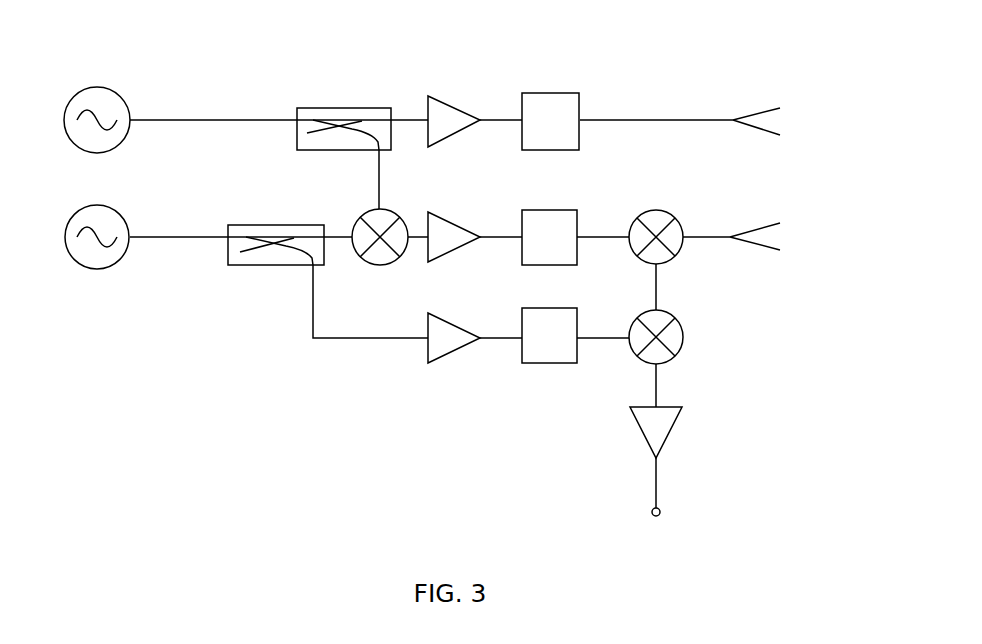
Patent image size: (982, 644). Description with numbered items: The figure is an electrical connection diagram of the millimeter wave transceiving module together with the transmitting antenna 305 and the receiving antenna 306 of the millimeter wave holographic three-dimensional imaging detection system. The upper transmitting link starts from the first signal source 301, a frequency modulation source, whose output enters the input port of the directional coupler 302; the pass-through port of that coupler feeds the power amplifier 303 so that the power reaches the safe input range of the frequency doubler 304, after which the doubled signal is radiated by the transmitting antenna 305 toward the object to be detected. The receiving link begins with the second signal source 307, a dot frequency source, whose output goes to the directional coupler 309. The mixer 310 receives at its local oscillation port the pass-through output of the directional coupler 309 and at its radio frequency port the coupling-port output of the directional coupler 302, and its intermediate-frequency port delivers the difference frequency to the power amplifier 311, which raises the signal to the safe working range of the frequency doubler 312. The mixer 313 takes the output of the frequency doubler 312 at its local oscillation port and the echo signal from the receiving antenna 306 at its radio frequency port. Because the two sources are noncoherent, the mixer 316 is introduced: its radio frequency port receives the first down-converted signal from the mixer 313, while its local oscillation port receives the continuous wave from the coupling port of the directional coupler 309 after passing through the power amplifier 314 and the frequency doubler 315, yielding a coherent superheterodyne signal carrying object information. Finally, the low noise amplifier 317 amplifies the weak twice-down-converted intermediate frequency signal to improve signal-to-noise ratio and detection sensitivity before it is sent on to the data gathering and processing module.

The first signal source 301 is at (97, 90).
The directional coupler 302 is at (345, 108).
The power amplifier 303 is at (443, 98).
The frequency doubler 304 is at (547, 93).
The transmitting antenna 305 is at (737, 118).
The receiving antenna 306 is at (757, 245).
The second signal source 307 is at (93, 267).
The directional coupler 309 is at (282, 265).
The mixer 310 is at (367, 262).
The power amplifier 311 is at (448, 257).
The frequency doubler 312 is at (532, 265).
The mixer 313 is at (643, 267).
The power amplifier 314 is at (445, 358).
The frequency doubler 315 is at (535, 365).
The mixer 316 is at (678, 353).
The low noise amplifier 317 is at (672, 435).